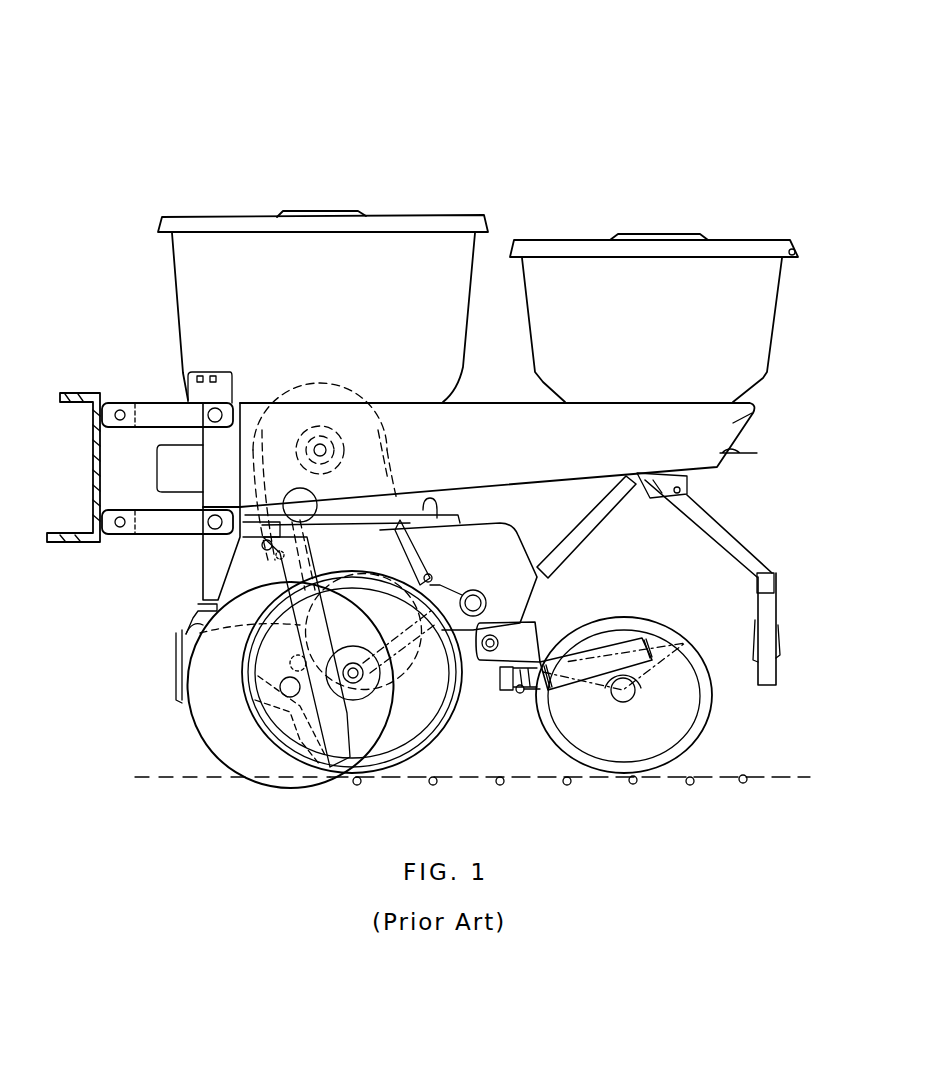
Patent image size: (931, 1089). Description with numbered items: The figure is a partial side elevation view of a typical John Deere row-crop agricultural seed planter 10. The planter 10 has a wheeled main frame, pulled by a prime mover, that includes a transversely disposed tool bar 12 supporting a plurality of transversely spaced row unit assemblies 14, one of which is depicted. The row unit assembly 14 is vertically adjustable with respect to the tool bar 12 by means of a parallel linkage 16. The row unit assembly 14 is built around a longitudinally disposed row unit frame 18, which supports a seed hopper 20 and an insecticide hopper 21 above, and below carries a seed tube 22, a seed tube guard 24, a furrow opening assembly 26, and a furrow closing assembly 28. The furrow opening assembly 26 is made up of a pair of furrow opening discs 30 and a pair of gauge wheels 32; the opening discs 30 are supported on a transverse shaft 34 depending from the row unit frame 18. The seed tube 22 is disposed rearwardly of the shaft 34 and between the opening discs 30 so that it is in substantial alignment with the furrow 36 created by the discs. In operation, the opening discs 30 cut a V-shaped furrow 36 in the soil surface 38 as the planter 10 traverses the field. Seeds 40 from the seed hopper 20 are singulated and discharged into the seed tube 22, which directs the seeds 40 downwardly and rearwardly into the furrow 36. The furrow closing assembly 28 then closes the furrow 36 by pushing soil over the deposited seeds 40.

The seed planter 10 is at (606, 100).
The tool bar 12 is at (82, 396).
The row unit assembly 14 is at (128, 298).
The parallel linkage 16 is at (148, 402).
The row unit frame 18 is at (760, 410).
The seed hopper 20 is at (320, 305).
The insecticide hopper 21 is at (657, 314).
The seed tube 22 is at (188, 632).
The seed tube guard 24 is at (262, 730).
The furrow opening assembly 26 is at (219, 790).
The furrow closing assembly 28 is at (730, 710).
The furrow opening disc 30 is at (185, 706).
The gauge wheel 32 is at (428, 718).
The transverse shaft 34 is at (258, 672).
The furrow 36 is at (460, 785).
The soil surface 38 is at (172, 776).
The seeds 40 is at (270, 556).